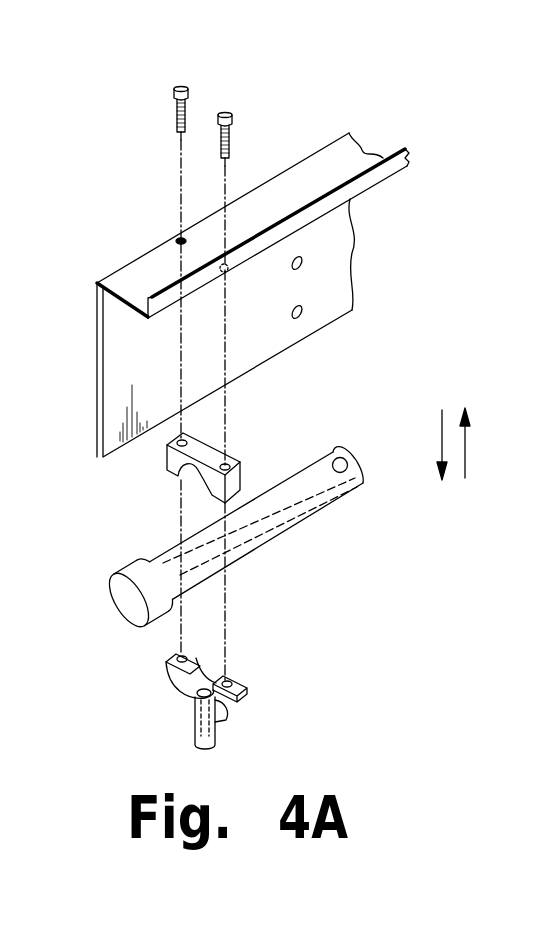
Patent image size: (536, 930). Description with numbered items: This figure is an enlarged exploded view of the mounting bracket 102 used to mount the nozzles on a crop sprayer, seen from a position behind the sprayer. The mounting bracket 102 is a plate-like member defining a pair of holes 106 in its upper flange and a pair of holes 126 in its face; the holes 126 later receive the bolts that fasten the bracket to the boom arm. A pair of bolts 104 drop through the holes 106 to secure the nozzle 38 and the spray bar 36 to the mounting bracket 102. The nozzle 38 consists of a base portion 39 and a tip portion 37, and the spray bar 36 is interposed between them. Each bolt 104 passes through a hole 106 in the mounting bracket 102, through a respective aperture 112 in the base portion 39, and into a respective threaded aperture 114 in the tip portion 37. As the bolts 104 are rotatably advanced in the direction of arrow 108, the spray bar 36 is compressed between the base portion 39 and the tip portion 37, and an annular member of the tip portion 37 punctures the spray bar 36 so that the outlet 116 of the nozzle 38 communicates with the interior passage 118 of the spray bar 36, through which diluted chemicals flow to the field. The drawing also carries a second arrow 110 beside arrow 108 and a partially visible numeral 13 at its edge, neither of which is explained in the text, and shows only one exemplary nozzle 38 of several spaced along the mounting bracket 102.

The mounting bracket 102 is at (112, 362).
The bolts 104 is at (179, 87).
The holes 106 is at (179, 240).
The hole 126 is at (304, 262).
The base portion 39 is at (236, 486).
The aperture 112 is at (180, 447).
The spray bar 36 is at (300, 518).
The interior passage 118 is at (336, 457).
The arrow 108 is at (440, 436).
The upward direction arrow 110 is at (466, 455).
The tip portion 37 is at (240, 682).
The threaded aperture 114 is at (230, 678).
The outlet 116 is at (194, 722).
The nozzle 38 is at (142, 688).
The partially shown element 13 is at (527, 197).